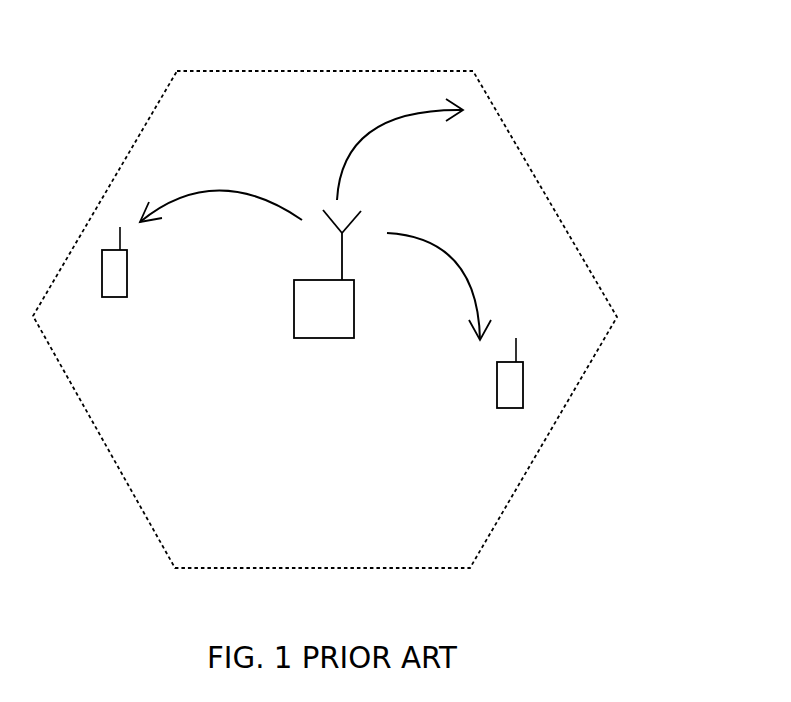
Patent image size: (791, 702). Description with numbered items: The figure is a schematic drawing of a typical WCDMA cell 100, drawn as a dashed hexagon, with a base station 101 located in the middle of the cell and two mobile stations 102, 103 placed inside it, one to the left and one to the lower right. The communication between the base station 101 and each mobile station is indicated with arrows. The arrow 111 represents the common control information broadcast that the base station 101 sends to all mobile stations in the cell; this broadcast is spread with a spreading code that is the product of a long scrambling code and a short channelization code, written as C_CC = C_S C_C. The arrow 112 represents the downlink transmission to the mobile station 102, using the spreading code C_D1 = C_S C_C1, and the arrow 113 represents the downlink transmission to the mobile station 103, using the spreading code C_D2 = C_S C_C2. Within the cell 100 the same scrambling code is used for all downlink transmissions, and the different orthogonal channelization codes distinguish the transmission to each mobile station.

The WCDMA cell 100 is at (325, 308).
The base station 101 is at (327, 274).
The mobile station 102 is at (113, 277).
The mobile station 103 is at (508, 388).
The arrow representing common control information broadcast 111 is at (370, 145).
The arrow representing downlink transmission to mobile station 102 112 is at (221, 188).
The arrow representing downlink transmission to mobile station 103 113 is at (461, 270).